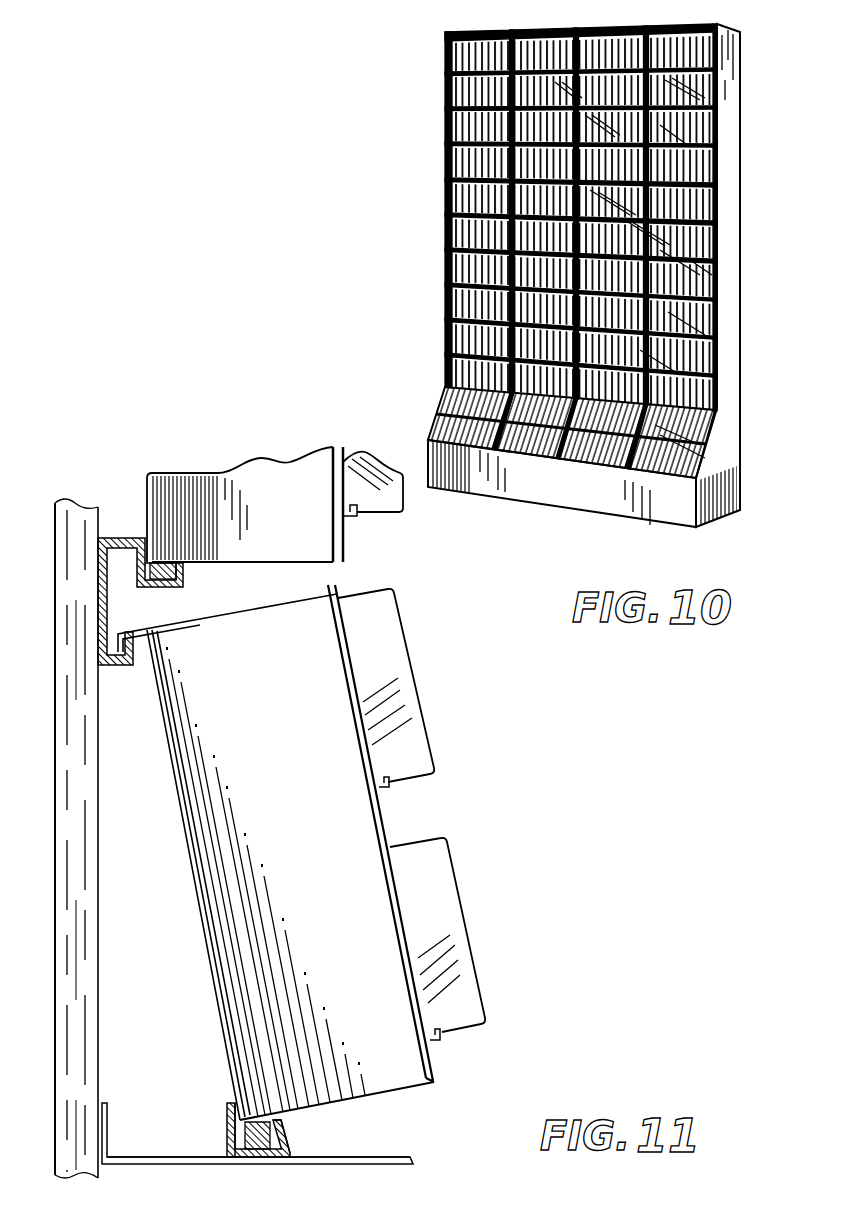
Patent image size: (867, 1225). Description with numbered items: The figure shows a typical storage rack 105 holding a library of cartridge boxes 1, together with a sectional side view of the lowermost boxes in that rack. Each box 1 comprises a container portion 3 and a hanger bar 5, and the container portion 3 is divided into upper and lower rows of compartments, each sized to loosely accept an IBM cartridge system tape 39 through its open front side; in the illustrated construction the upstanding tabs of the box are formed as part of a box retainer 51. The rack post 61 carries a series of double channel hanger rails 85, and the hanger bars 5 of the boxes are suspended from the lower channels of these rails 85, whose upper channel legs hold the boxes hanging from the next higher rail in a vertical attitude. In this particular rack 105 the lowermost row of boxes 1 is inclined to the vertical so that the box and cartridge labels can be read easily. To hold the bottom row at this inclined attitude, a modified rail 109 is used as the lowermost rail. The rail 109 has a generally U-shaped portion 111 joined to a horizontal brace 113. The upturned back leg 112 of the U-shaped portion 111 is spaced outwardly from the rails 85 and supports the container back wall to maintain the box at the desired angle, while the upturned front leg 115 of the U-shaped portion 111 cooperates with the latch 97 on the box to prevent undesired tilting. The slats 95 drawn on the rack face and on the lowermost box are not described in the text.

In FIG. 10, the box 1 is at (720, 391).
In FIG. 11, the container portion 3 is at (231, 606).
In FIG. 11, the hanger bar 5 is at (168, 612).
In FIG. 11, the cartridge system tape 39 is at (388, 480).
In FIG. 11, the box retainer 51 is at (360, 521).
In FIG. 11, the post 61 is at (86, 777).
In FIG. 11, the double channel hanger rail 85 is at (137, 533).
In FIG. 10, the divider slat 95 is at (703, 177).
In FIG. 11, the divider slat 95 is at (316, 592).
In FIG. 11, the latch 97 is at (166, 574).
In FIG. 10, the storage rack 105 is at (732, 82).
In FIG. 11, the modified rail 109 is at (150, 1165).
In FIG. 11, the U-shaped portion 111 is at (224, 1104).
In FIG. 11, the upturned back leg 112 is at (262, 1126).
In FIG. 11, the horizontal brace 113 is at (337, 1166).
In FIG. 11, the upturned front leg 115 is at (286, 1137).